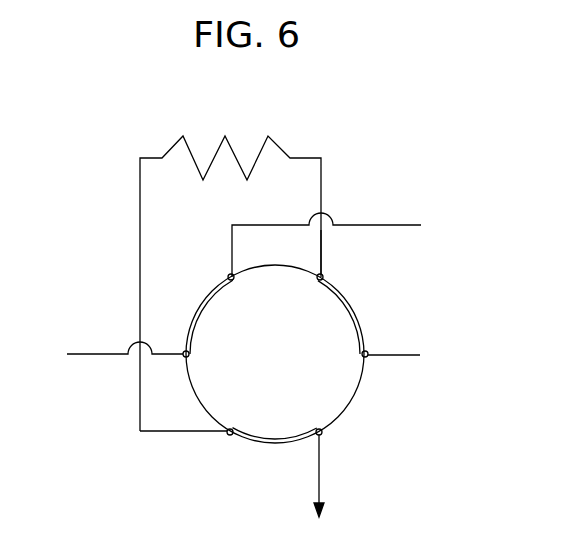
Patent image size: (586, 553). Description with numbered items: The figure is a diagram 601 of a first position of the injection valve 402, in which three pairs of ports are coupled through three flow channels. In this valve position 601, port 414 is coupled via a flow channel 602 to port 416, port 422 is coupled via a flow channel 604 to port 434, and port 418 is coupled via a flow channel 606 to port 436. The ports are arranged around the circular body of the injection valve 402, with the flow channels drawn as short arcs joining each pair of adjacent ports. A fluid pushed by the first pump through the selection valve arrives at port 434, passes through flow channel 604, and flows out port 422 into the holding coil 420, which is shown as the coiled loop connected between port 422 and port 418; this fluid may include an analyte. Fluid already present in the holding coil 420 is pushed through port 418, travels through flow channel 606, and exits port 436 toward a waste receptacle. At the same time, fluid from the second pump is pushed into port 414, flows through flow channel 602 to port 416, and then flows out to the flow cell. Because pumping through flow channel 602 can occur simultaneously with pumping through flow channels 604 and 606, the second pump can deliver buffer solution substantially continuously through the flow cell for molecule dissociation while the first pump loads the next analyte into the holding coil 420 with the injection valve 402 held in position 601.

The first position diagram 601 is at (408, 160).
The holding coil 420 is at (172, 147).
The port 416 is at (222, 278).
The port 422 is at (326, 274).
The port 414 is at (184, 358).
The port 434 is at (369, 340).
The port 418 is at (226, 440).
The port 436 is at (324, 440).
The flow channel 602 is at (186, 322).
The flow channel 604 is at (346, 297).
The flow channel 606 is at (292, 447).
The injection valve 402 is at (253, 416).